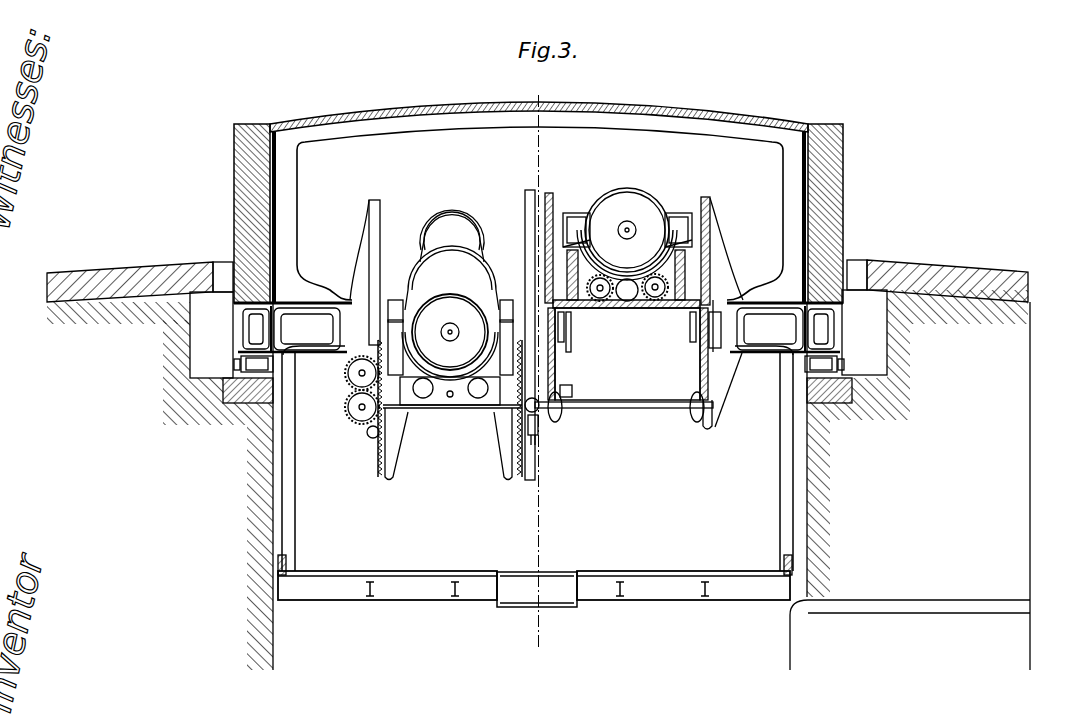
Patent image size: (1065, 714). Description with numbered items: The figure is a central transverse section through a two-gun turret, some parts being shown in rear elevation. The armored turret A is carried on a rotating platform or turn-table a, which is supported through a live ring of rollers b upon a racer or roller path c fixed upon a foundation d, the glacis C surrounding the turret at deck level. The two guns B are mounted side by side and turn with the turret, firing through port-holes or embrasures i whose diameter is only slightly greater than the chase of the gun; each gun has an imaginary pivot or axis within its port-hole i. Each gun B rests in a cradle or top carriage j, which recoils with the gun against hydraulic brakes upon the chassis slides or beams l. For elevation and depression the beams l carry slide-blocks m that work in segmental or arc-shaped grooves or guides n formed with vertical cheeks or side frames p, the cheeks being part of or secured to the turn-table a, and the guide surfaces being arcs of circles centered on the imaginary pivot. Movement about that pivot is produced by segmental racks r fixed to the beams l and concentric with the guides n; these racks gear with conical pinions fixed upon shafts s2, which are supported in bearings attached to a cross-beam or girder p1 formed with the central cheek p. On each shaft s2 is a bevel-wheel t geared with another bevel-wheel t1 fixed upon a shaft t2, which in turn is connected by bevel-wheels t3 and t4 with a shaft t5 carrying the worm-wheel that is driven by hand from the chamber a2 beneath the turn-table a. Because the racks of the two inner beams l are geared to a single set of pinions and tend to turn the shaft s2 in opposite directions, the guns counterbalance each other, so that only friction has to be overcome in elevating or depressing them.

The turret A is at (533, 202).
The glacis C is at (538, 454).
The rotating platform or turn-table a is at (535, 316).
The turret lower cylinder and floor a2 is at (535, 476).
The live ring of rollers b is at (539, 365).
The racer or roller path c is at (234, 364).
The foundation d is at (535, 393).
The gun B is at (530, 334).
The port-hole or embrasure i is at (470, 222).
The cradle or top carriage j is at (540, 267).
The chassis slide or beam l is at (554, 312).
The slide-block m is at (738, 266).
The segmental or arc-shaped groove or guide n is at (556, 320).
The vertical cheek or side frame p is at (380, 228).
The cross-beam or girder p1 is at (575, 336).
The segmental rack r is at (449, 408).
The shaft s2 is at (564, 330).
The bevel-wheel t is at (345, 375).
The bevel-wheel t1 is at (362, 407).
The shaft t2 is at (468, 410).
The bevel-wheel t3 is at (532, 386).
The bevel-wheel t4 is at (528, 417).
The shaft t5 is at (624, 403).